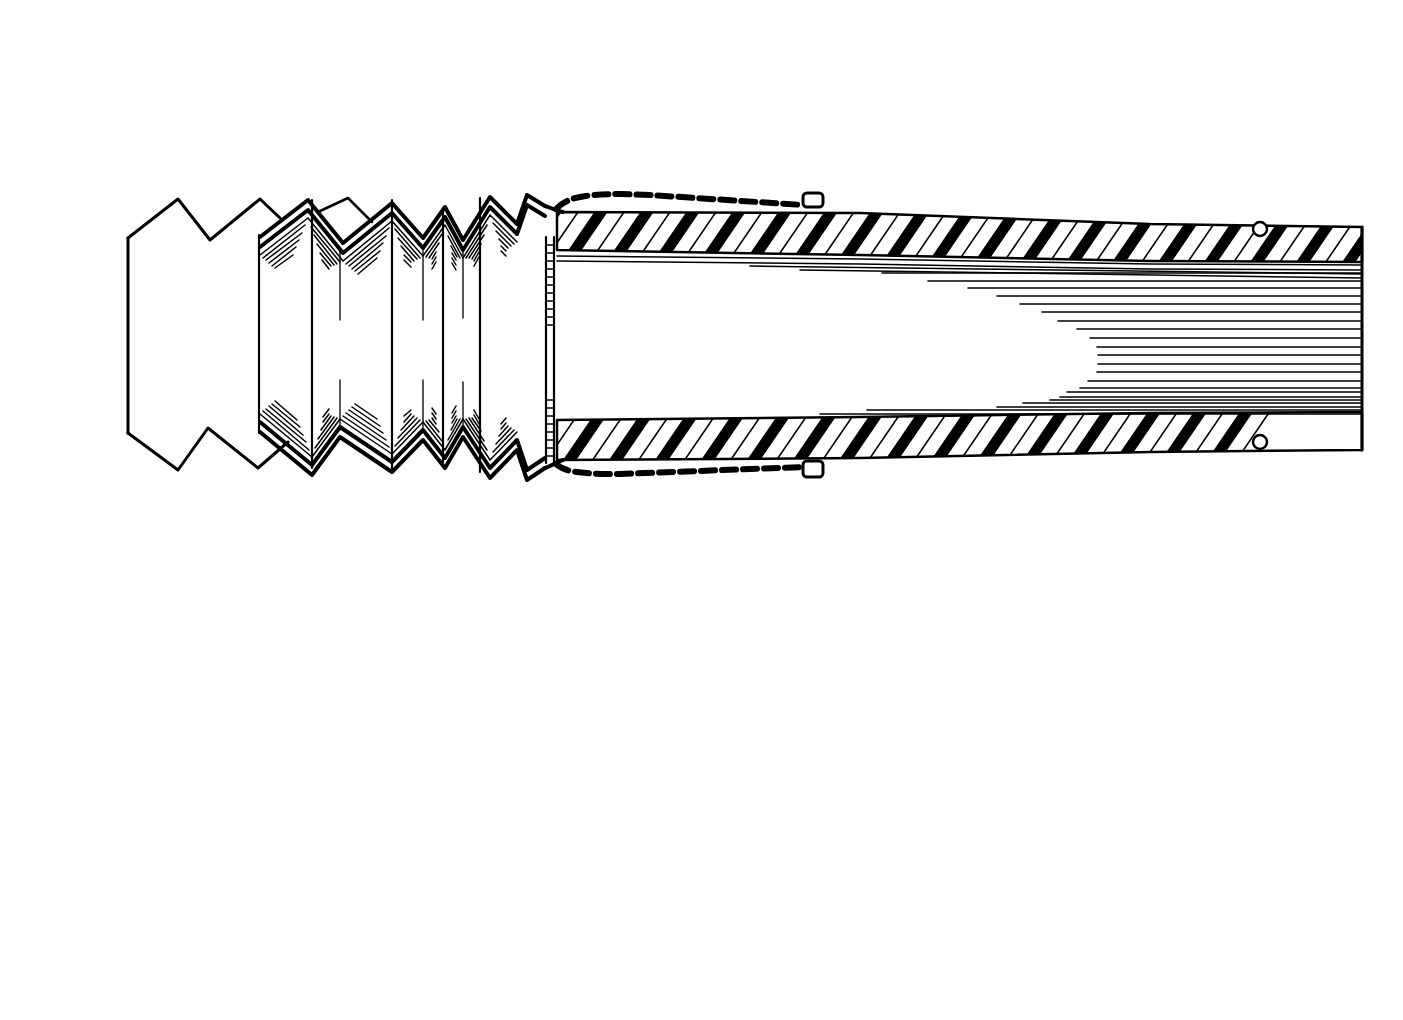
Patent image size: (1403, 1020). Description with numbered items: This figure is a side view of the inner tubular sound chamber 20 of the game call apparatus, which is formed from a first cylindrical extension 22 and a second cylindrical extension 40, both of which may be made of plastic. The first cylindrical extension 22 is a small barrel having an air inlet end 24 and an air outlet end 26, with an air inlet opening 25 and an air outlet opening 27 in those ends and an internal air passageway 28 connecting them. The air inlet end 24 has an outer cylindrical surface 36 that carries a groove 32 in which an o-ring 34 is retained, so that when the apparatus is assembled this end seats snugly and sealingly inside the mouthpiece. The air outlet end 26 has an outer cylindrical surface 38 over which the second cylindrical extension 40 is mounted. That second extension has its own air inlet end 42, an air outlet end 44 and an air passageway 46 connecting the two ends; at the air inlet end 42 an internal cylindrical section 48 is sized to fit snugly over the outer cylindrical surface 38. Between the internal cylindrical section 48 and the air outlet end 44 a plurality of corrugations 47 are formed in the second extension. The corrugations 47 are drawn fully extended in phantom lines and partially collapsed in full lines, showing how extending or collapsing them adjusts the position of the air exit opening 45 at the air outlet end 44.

The inner tubular sound chamber 20 is at (865, 604).
The first cylindrical extension 22 is at (1112, 462).
The air inlet end 24 is at (1173, 212).
The air inlet opening 25 is at (1363, 300).
The air outlet end 26 is at (540, 200).
The air outlet opening 27 is at (547, 370).
The internal air passageway 28 is at (918, 302).
The groove 32 is at (1268, 222).
The o-ring 34 is at (1259, 452).
The outer cylindrical surface 36 is at (1177, 453).
The outer cylindrical surface 38 is at (613, 483).
The second cylindrical extension 40 is at (168, 192).
The air inlet end 42 is at (768, 186).
The air outlet end 44 is at (288, 470).
The air exit opening 45 is at (125, 408).
The air passageway 46 is at (328, 307).
The corrugations 47 is at (235, 200).
The internal cylindrical section 48 is at (716, 212).